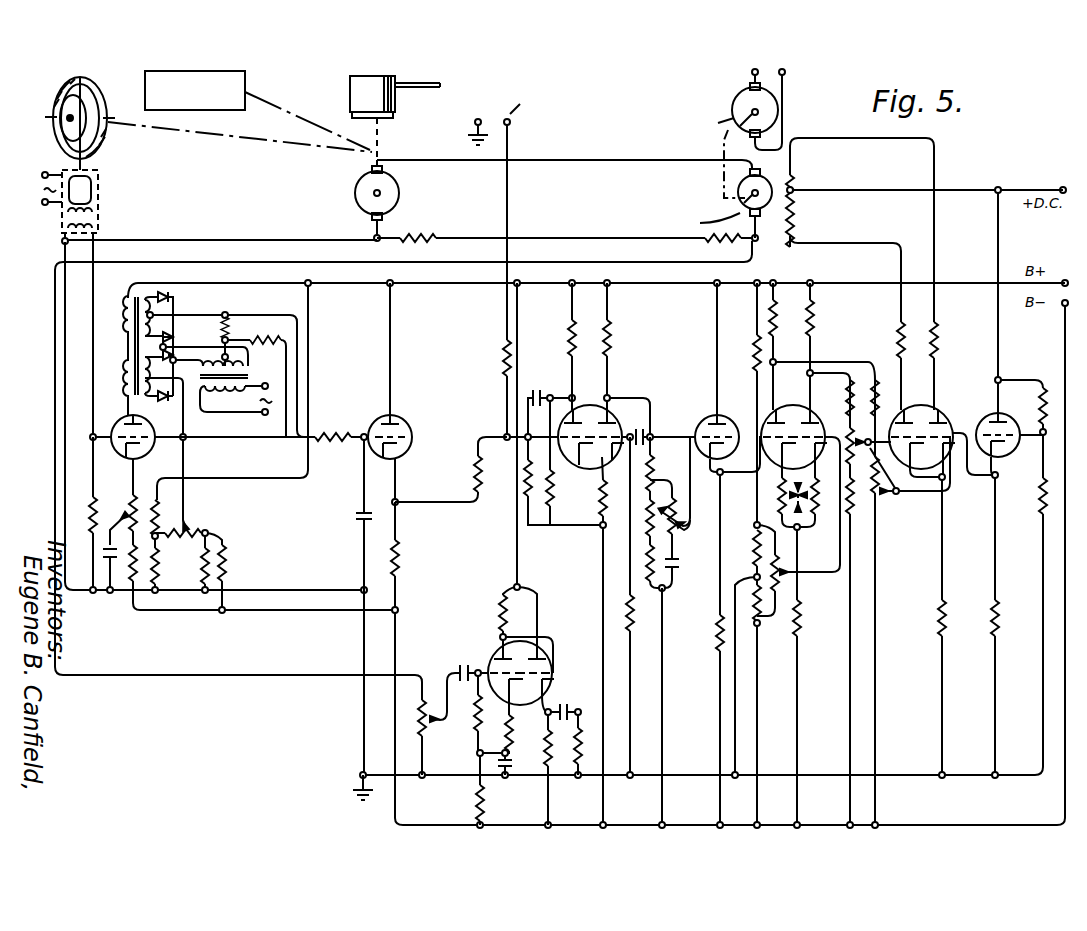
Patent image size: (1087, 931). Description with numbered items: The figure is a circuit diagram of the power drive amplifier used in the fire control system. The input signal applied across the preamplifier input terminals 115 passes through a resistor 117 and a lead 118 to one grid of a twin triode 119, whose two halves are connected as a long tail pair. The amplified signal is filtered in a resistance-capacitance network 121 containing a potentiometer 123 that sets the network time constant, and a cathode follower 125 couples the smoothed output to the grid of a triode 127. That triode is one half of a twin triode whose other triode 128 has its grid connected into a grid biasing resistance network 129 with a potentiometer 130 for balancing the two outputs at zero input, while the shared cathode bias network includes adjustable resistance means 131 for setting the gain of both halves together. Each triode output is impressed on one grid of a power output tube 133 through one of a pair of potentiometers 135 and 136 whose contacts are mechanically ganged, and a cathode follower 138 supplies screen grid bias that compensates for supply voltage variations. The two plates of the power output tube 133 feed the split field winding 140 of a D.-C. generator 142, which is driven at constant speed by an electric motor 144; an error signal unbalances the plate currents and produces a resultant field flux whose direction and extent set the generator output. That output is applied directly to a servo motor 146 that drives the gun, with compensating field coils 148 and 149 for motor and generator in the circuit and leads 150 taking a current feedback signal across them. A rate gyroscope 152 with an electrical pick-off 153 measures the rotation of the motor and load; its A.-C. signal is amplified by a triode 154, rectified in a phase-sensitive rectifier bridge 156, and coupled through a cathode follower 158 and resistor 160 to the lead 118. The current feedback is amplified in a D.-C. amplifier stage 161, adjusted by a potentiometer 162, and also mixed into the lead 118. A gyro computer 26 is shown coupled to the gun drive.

The rate gyroscope 152 is at (57, 112).
The electrical pick-off 153 is at (98, 217).
The gyro computer 26 is at (207, 110).
The potentiometer 135 is at (853, 428).
The servo motor 146 is at (358, 187).
The compensating field coil 148 is at (436, 244).
The compensating field coil 149 is at (705, 243).
The leads 150 is at (280, 244).
The D.-C. generator 142 is at (770, 214).
The split field winding 140 is at (799, 195).
The electric motor 144 is at (742, 98).
The preamplifier input terminals 115 is at (498, 109).
The resistor 117 is at (500, 358).
The lead 118 is at (480, 482).
The resistor 160 is at (484, 489).
The twin triode 119 is at (590, 414).
The resistance-capacitance network 121 is at (705, 555).
The potentiometer 123 is at (668, 505).
The cathode follower 125 is at (727, 418).
The triode 127 is at (779, 416).
The triode 128 is at (813, 416).
The grid biasing resistance network 129 is at (750, 559).
The potentiometer 130 is at (795, 525).
The adjustable resistance means 131 is at (828, 551).
The power output tube 133 is at (917, 416).
The potentiometer 136 is at (879, 496).
The cathode follower 138 is at (988, 417).
The triode 154 is at (150, 447).
The phase-sensitive rectifier bridge 156 is at (212, 338).
The cathode follower 158 is at (404, 452).
The D.-C. amplifier stage 161 is at (575, 700).
The potentiometer 162 is at (427, 730).